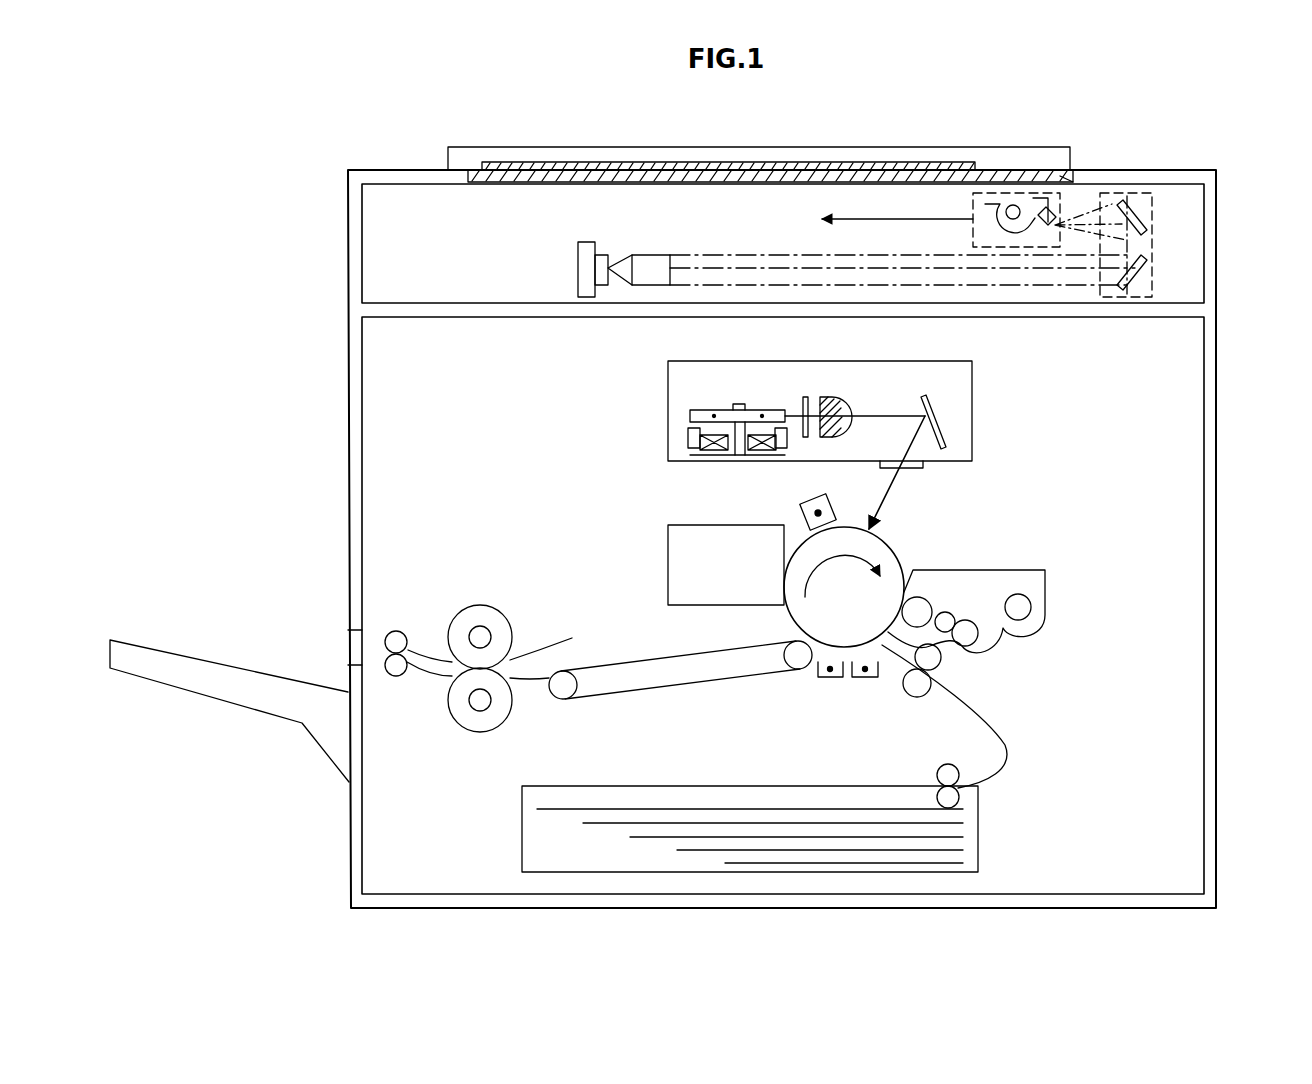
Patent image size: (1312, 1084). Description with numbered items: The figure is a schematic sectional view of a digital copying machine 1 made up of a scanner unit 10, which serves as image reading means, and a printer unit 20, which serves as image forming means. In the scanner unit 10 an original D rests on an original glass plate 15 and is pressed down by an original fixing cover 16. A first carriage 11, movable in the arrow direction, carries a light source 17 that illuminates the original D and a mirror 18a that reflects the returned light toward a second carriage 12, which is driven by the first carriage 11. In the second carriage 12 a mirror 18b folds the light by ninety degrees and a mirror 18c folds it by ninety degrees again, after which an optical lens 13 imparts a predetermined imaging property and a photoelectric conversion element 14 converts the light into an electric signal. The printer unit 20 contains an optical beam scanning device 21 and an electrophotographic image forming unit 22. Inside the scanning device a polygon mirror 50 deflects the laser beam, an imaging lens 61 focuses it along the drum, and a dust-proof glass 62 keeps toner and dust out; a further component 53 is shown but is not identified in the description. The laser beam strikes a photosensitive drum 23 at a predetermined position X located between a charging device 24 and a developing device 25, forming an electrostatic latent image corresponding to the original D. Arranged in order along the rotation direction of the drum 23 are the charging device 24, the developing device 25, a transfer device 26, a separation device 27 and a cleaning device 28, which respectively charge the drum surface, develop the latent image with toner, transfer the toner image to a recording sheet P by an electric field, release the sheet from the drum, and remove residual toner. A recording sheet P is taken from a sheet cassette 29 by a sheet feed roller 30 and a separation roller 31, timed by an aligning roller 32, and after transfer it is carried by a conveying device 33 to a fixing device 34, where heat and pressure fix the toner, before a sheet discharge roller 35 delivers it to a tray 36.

The digital copying machine 1 is at (340, 157).
The scanner unit 10 is at (372, 242).
The first carriage 11 is at (993, 195).
The second carriage 12 is at (1160, 290).
The optical lens 13 is at (650, 252).
The photoelectric conversion element 14 is at (578, 268).
The original glass plate 15 is at (556, 165).
The original fixing cover 16 is at (813, 157).
The light source 17 is at (1016, 204).
The mirror 18a is at (1066, 180).
The mirror 18b is at (1150, 216).
The mirror 18c is at (1150, 272).
The printer unit 20 is at (1190, 745).
The optical beam scanning device 21 is at (972, 410).
The image forming unit 22 is at (1018, 683).
The photosensitive drum 23 is at (900, 560).
The charging device 24 is at (803, 498).
The developing device 25 is at (1025, 570).
The transfer device 26 is at (862, 680).
The separation device 27 is at (818, 688).
The cleaning device 28 is at (668, 565).
The sheet cassette 29 is at (600, 850).
The sheet feed roller 30 is at (960, 797).
The separation roller 31 is at (958, 770).
The aligning roller 32 is at (918, 700).
The conveying device 33 is at (635, 690).
The fixing device 34 is at (480, 606).
The sheet discharge roller 35 is at (396, 676).
The tray 36 is at (210, 695).
The polygon mirror 50 is at (698, 405).
The reflecting mirror 53 is at (880, 466).
The imaging lens 61 is at (833, 397).
The dust-proof glass 62 is at (806, 395).
The original D is at (872, 165).
The recording sheet P is at (808, 850).
The predetermined position X is at (880, 519).